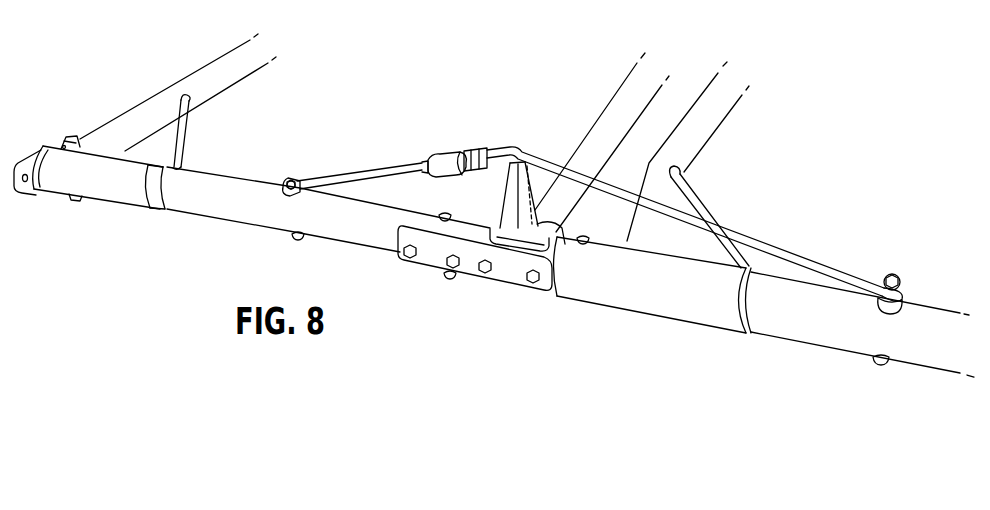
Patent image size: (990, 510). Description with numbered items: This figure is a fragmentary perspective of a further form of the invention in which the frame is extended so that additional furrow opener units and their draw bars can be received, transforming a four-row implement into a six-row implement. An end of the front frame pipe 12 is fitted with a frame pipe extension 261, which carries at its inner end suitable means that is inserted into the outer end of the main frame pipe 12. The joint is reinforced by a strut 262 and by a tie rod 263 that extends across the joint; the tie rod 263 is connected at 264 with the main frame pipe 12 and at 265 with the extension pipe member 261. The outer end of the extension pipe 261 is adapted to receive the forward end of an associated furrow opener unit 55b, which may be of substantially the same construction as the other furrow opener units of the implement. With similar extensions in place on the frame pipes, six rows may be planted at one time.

The furrow opener unit 55b is at (195, 70).
The front frame pipe 12 is at (809, 333).
The frame pipe extension 261 is at (238, 217).
The strut 262 is at (513, 198).
The tie rod 263 is at (542, 163).
The connection to main frame pipe 264 is at (890, 277).
The connection to extension pipe 265 is at (290, 178).